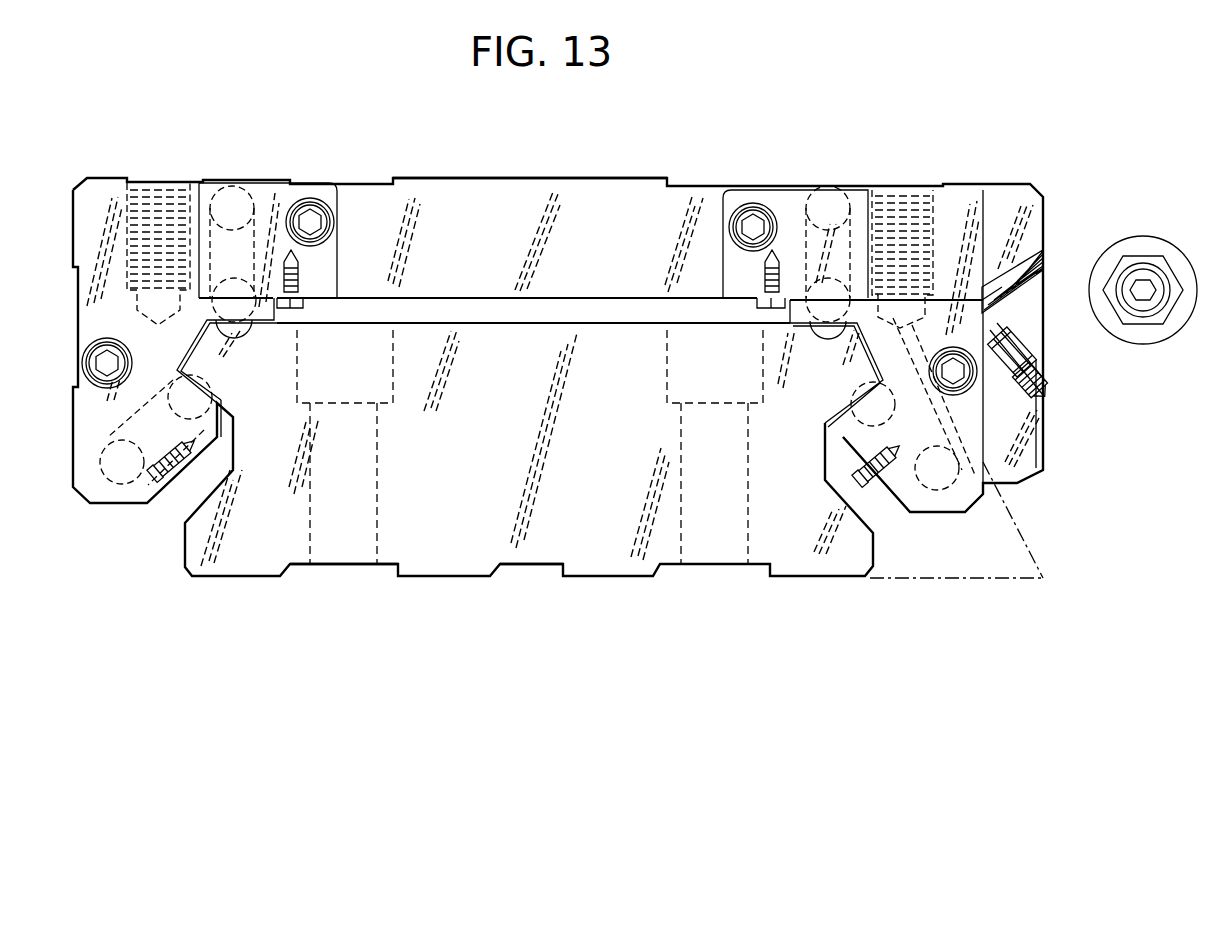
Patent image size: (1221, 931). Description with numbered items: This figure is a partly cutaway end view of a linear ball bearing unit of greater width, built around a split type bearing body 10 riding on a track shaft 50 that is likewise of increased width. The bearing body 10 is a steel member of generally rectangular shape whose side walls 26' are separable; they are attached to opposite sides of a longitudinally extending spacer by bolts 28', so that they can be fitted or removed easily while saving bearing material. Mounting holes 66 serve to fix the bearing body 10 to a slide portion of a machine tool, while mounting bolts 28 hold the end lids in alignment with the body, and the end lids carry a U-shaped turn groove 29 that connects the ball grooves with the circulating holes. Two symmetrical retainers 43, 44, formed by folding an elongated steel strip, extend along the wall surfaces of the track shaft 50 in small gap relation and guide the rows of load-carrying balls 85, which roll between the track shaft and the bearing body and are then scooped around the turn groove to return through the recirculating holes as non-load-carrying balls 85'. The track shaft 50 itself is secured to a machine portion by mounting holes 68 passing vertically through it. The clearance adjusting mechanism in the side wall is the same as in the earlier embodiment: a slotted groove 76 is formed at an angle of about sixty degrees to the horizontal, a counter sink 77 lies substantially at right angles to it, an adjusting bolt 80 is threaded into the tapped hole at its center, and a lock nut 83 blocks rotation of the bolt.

The bearing body 10 is at (603, 174).
The side walls 26' is at (590, 199).
The mounting bolts 28 is at (529, 366).
The bolts 28' is at (542, 224).
The U-shaped turn groove 29 is at (143, 405).
The retainer 43 is at (900, 505).
The retainer 44 is at (165, 496).
The track shaft 50 is at (537, 562).
The mounting holes 66 is at (132, 188).
The mounting holes 68 is at (376, 548).
The slotted groove 76 is at (1008, 483).
The counter sink 77 is at (1143, 237).
The adjusting bolt 80 is at (1150, 288).
The lock nut 83 is at (1165, 300).
The load-carrying balls 85 is at (531, 352).
The non-load-carrying balls 85' is at (528, 348).